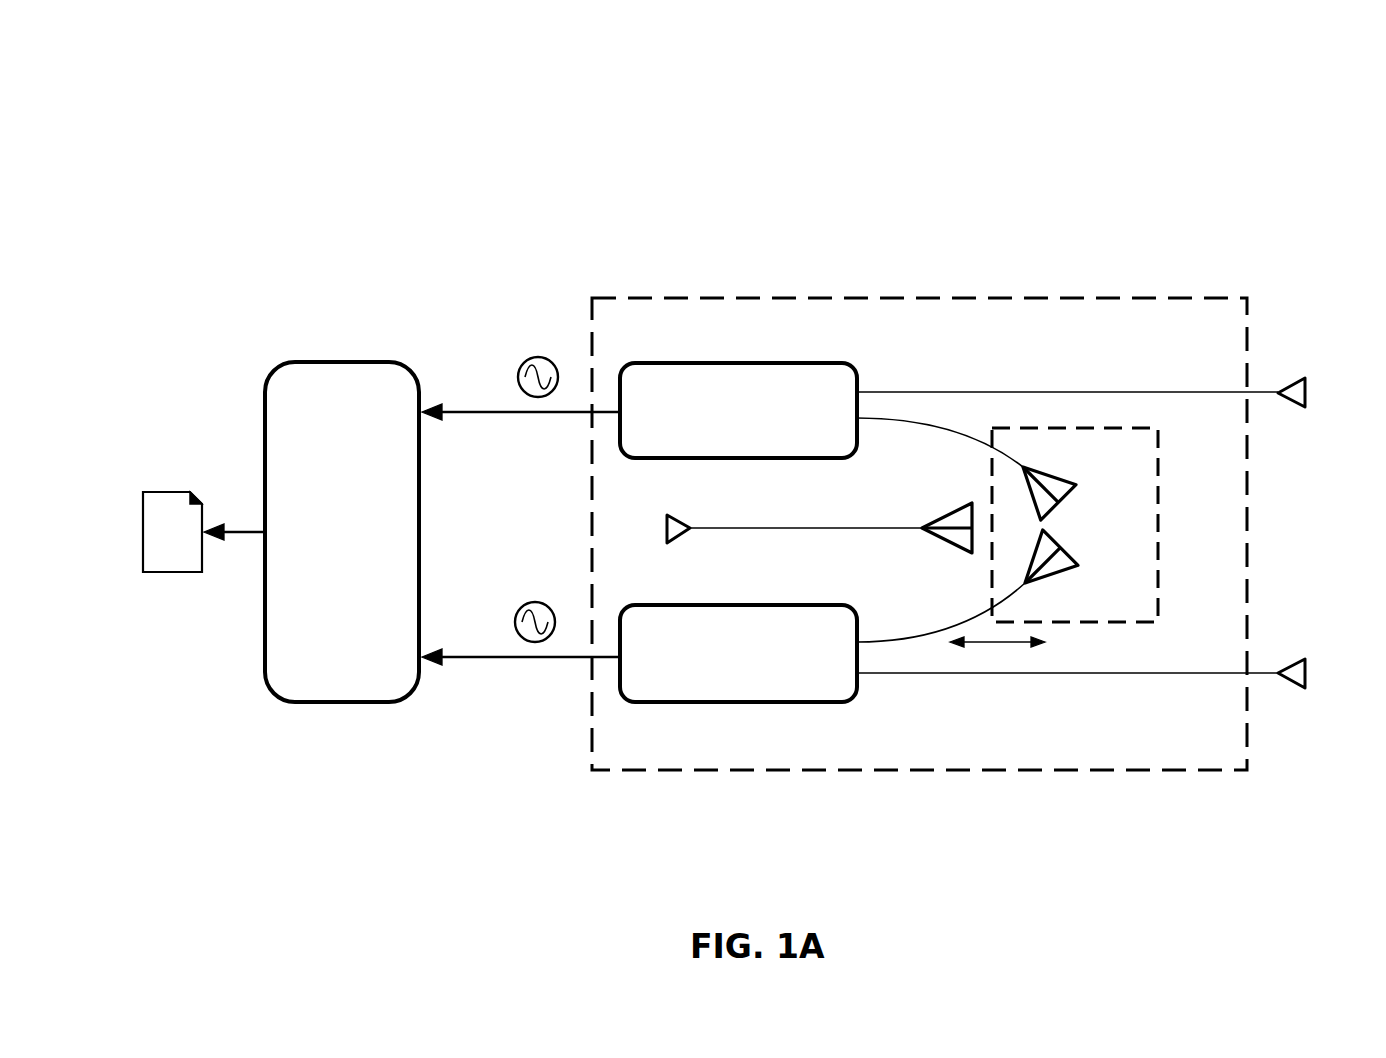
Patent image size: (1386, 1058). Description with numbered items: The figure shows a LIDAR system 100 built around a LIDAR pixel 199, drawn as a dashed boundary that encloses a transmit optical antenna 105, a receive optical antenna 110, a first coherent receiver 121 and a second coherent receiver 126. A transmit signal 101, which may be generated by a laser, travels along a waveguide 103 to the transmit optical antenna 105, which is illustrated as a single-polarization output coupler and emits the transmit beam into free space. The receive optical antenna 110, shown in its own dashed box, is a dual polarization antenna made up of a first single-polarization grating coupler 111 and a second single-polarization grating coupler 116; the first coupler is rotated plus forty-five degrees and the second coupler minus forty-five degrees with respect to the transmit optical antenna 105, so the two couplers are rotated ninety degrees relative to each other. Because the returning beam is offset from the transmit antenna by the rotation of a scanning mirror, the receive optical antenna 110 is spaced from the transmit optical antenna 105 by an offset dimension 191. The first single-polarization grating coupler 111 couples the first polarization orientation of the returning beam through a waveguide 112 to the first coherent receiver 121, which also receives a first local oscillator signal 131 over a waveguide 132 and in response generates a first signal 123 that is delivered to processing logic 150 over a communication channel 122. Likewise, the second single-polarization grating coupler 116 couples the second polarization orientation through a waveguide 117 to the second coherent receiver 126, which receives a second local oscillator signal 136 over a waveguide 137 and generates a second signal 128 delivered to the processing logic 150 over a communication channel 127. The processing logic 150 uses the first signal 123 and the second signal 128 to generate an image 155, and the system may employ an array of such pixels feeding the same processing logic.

The LIDAR system 100 is at (1346, 54).
The transmit signal 101 is at (672, 514).
The waveguide 103 is at (797, 531).
The transmit optical antenna 105 is at (938, 545).
The receive optical antenna 110 is at (1160, 496).
The first single-polarization grating coupler 111 is at (1072, 494).
The waveguide 112 is at (950, 429).
The second single-polarization grating coupler 116 is at (1075, 556).
The waveguide 117 is at (970, 614).
The first coherent receiver 121 is at (738, 410).
The communication channel 122 is at (518, 417).
The first signal 123 is at (525, 363).
The second coherent receiver 126 is at (738, 653).
The communication channel 127 is at (548, 664).
The second signal 128 is at (522, 607).
The first local oscillator signal 131 is at (1303, 377).
The waveguide 132 is at (960, 390).
The second local oscillator signal 136 is at (1303, 658).
The waveguide 137 is at (998, 678).
The processing logic 150 is at (342, 532).
The image 155 is at (204, 532).
The offset dimension 191 is at (995, 650).
The LIDAR pixel 199 is at (592, 296).